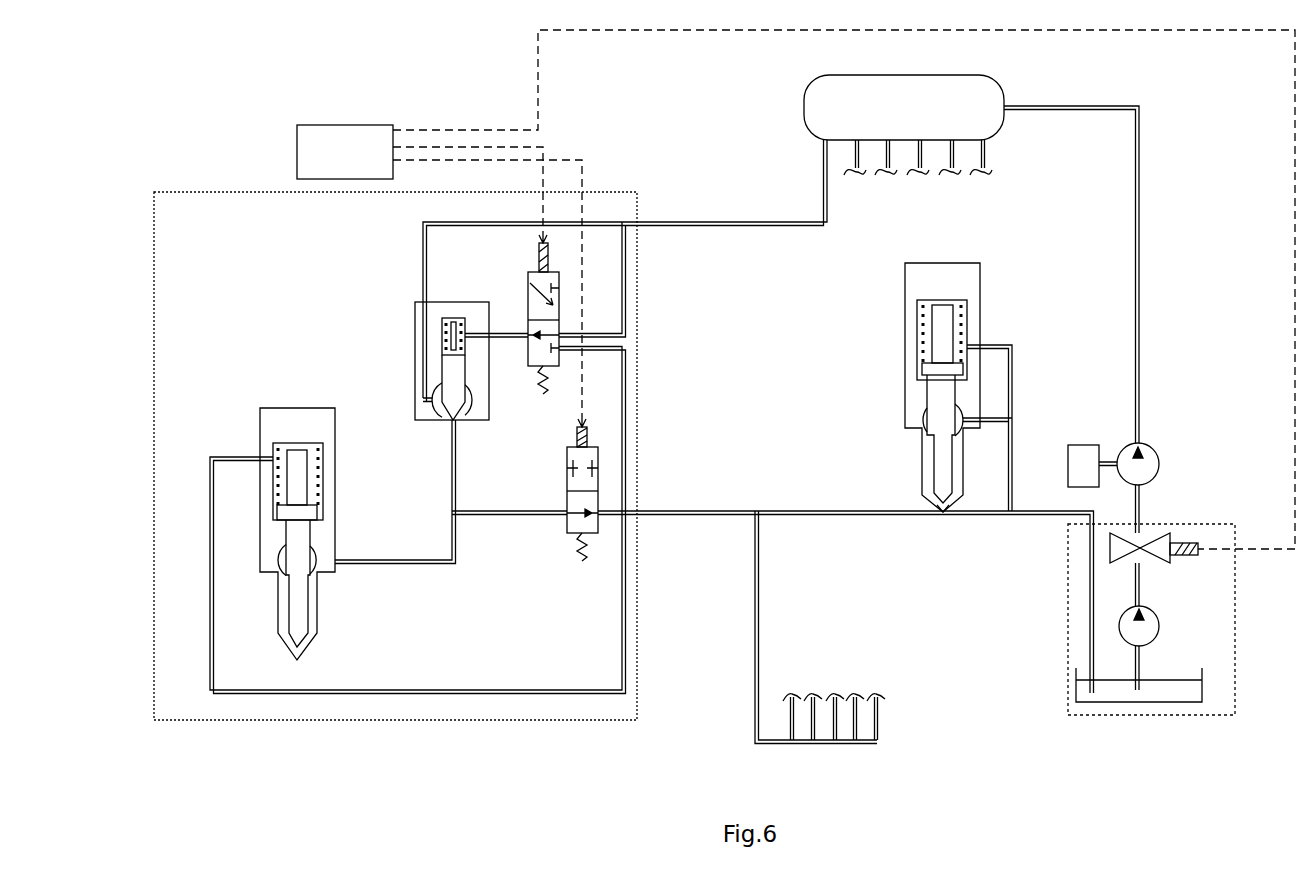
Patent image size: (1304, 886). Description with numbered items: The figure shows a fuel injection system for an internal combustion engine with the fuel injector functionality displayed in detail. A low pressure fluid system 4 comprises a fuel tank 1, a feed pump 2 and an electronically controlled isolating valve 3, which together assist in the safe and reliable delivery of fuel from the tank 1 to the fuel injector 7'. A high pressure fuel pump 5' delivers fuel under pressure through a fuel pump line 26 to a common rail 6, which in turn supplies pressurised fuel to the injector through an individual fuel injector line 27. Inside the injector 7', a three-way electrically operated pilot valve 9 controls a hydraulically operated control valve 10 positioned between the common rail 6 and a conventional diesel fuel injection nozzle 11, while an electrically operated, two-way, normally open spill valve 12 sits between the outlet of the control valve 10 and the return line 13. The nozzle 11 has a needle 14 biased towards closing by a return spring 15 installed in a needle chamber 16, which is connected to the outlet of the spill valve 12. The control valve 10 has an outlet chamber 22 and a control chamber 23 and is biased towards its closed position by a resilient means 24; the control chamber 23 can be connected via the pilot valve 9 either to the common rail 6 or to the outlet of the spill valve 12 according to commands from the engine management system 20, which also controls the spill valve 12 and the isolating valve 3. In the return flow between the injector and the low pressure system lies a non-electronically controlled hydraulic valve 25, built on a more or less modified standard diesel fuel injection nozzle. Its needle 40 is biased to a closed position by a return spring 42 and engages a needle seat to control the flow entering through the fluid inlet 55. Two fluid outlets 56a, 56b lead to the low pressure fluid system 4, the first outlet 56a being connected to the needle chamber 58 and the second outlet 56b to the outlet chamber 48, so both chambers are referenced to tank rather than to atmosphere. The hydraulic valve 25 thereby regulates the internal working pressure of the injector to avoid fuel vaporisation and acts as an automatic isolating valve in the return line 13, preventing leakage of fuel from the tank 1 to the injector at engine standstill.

The fuel tank 1 is at (1160, 697).
The feed pump 2 is at (1160, 626).
The electronically controlled isolating valve 3 is at (1162, 548).
The low pressure fluid system 4 is at (1222, 717).
The high pressure fuel pump 5' is at (1153, 465).
The common rail 6 is at (1003, 83).
The fuel injector 7' is at (395, 390).
The three-way electrically operated pilot valve 9 is at (528, 282).
The hydraulically operated control valve 10 is at (415, 338).
The fuel injection nozzle 11 is at (297, 493).
The spill valve 12 is at (567, 487).
The return line 13 is at (760, 612).
The needle 14 is at (298, 605).
The return spring 15 is at (277, 448).
The needle chamber 16 is at (282, 483).
The engine management system 20 is at (313, 122).
The outlet chamber 22 is at (431, 393).
The control chamber 23 is at (451, 332).
The resilient means 24 is at (443, 321).
The hydraulic valve 25 is at (947, 413).
The fuel pump line 26 is at (1141, 380).
The fuel injector line 27 is at (797, 222).
The needle 40 is at (942, 441).
The return spring 42 is at (922, 316).
The outlet chamber 48 is at (920, 415).
The fluid inlet 55 is at (942, 514).
The first fluid outlet 56a is at (985, 347).
The second fluid outlet 56b is at (982, 418).
The needle chamber 58 is at (926, 300).